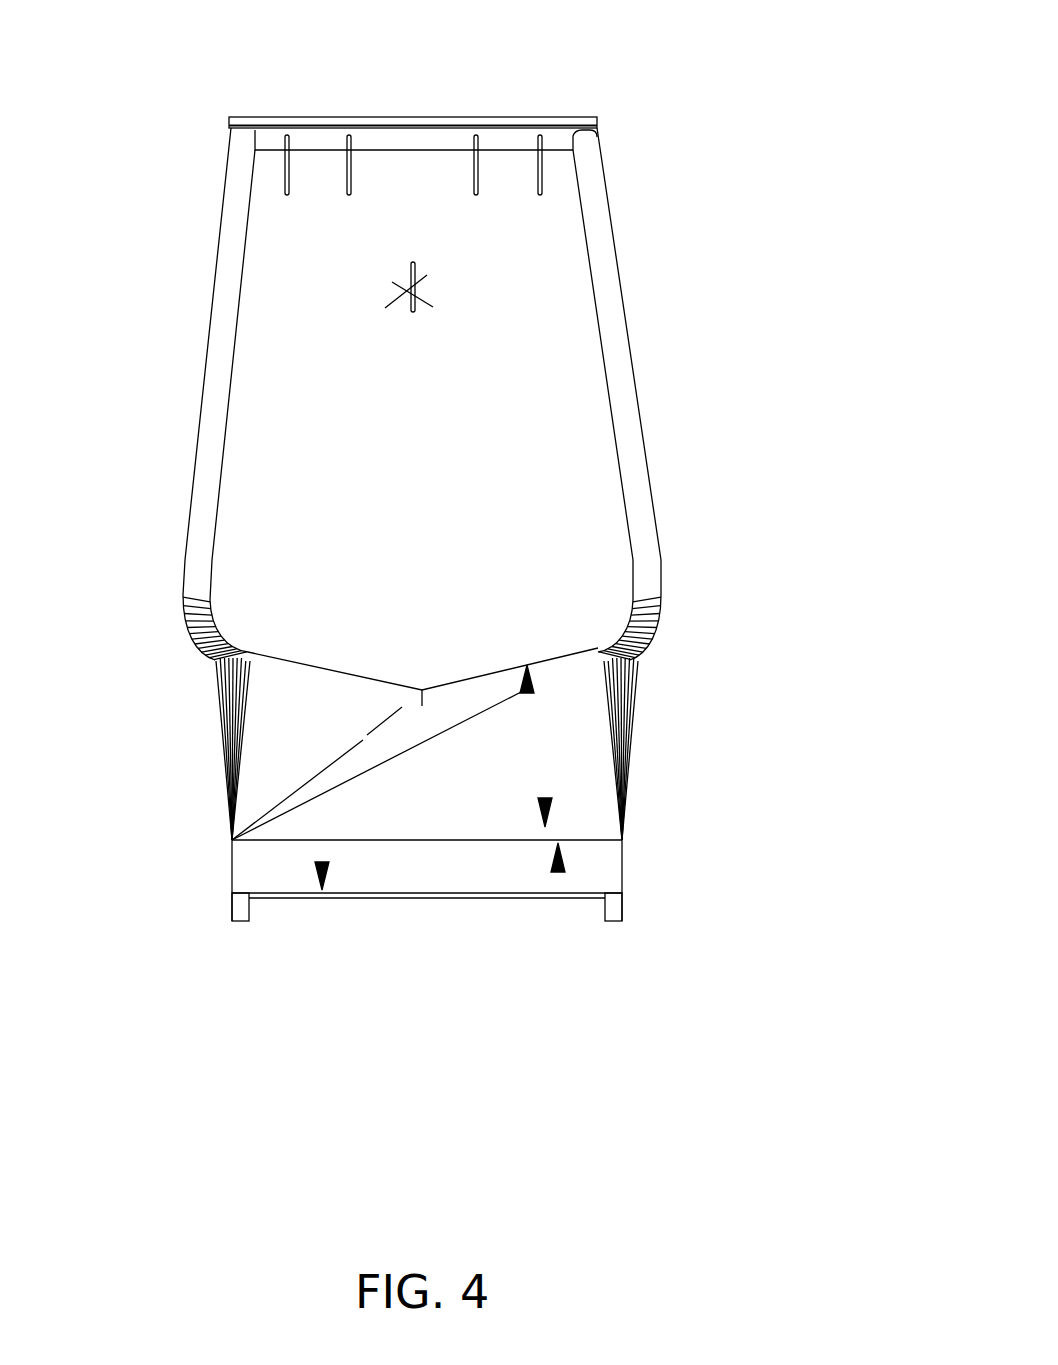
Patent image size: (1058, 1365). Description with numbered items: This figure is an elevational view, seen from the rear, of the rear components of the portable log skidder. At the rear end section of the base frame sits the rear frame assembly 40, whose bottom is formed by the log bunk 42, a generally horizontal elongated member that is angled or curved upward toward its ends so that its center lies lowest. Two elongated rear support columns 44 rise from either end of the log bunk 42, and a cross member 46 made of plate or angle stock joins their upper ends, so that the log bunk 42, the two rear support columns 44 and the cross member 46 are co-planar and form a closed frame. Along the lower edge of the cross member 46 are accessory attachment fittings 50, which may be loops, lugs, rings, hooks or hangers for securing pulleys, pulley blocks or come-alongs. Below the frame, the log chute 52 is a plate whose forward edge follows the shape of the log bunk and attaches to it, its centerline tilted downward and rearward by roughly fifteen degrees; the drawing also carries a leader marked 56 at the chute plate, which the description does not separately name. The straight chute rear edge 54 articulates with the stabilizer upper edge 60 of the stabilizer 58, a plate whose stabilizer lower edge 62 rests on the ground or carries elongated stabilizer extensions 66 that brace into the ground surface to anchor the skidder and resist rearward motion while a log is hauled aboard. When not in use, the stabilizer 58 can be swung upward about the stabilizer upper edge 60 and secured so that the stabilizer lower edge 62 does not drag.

The rear frame assembly 40 is at (670, 385).
The log bunk 42 is at (217, 672).
The rear support columns 44 is at (220, 327).
The cross member 46 is at (420, 133).
The accessory attachment fittings 50 is at (349, 150).
The log chute 52 is at (502, 811).
The chute rear edge 54 is at (545, 800).
The funnel wall 56 is at (528, 692).
The stabilizer 58 is at (422, 884).
The stabilizer upper edge 60 is at (558, 870).
The stabilizer lower edge 62 is at (322, 865).
The stabilizer extensions 66 is at (605, 910).